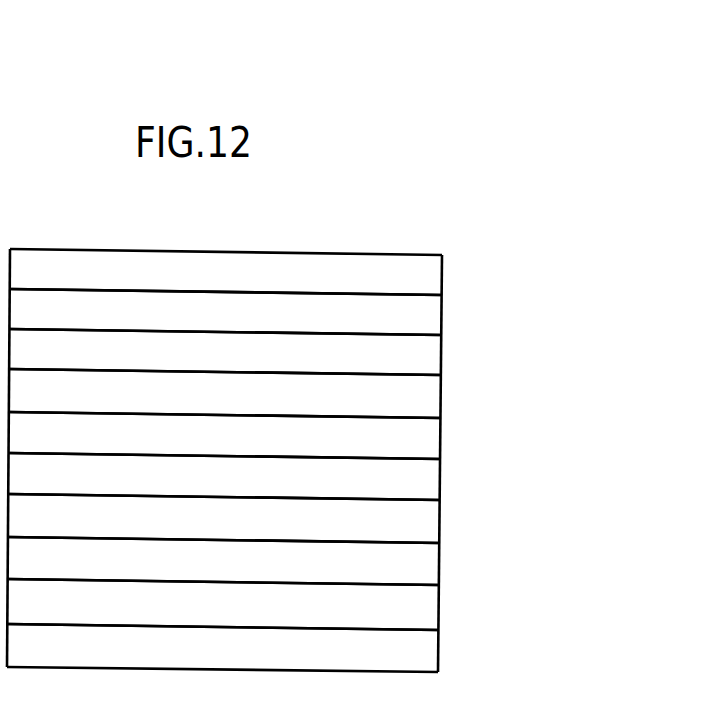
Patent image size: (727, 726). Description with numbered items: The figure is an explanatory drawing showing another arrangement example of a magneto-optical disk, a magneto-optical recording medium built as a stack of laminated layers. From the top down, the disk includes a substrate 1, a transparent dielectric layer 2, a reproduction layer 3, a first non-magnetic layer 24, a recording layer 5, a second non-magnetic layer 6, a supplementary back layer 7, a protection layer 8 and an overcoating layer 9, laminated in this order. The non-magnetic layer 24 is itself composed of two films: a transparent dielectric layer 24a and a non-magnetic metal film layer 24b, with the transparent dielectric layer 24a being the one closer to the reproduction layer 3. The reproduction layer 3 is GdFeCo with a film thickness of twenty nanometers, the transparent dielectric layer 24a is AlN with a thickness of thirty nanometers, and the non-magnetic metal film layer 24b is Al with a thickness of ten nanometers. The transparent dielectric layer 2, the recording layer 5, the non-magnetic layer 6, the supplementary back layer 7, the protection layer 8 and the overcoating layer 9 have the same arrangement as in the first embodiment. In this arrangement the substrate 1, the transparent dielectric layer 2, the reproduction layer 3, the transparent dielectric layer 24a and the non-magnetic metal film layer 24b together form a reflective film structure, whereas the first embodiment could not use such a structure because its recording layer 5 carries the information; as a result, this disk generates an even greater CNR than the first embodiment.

The substrate 1 is at (430, 275).
The transparent dielectric layer 2 is at (424, 320).
The reproduction layer 3 is at (427, 363).
The non-magnetic layer 24 is at (294, 414).
The transparent dielectric layer 24a is at (424, 400).
The non-magnetic metal film layer 24b is at (424, 438).
The recording layer 5 is at (427, 485).
The non-magnetic layer 6 is at (427, 525).
The supplementary back layer 7 is at (432, 567).
The protection layer 8 is at (427, 612).
The overcoating layer 9 is at (423, 660).